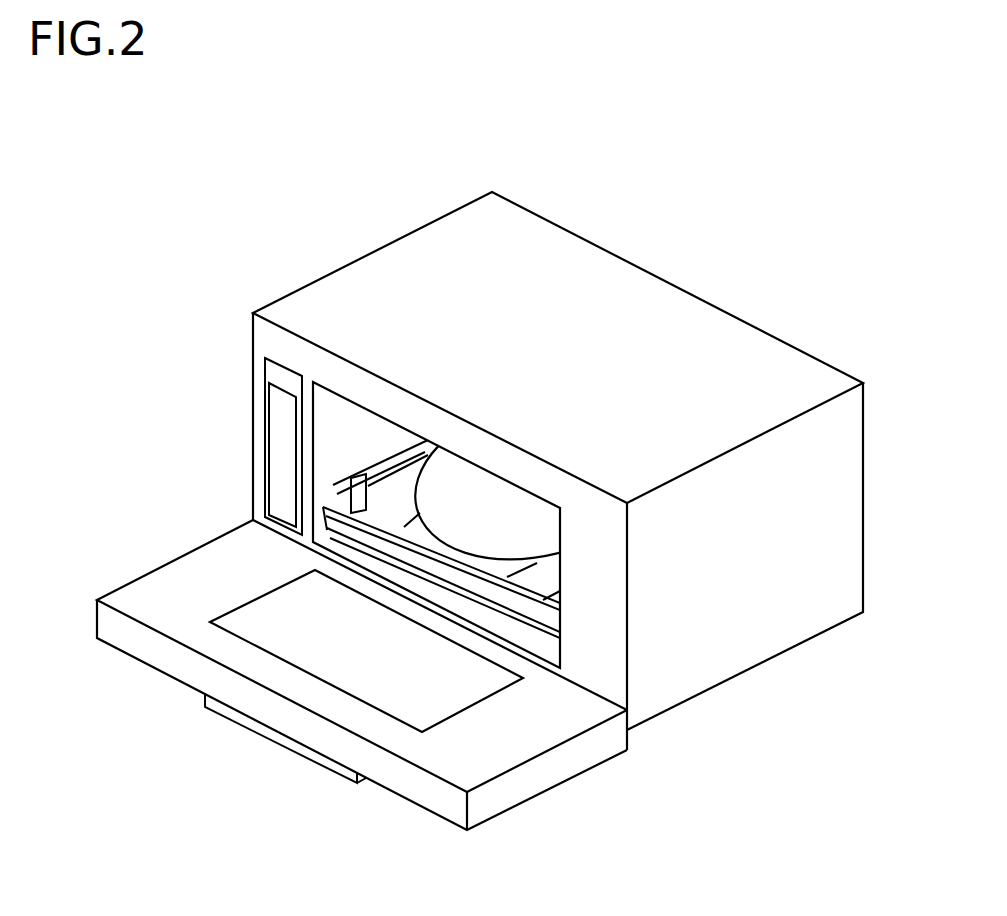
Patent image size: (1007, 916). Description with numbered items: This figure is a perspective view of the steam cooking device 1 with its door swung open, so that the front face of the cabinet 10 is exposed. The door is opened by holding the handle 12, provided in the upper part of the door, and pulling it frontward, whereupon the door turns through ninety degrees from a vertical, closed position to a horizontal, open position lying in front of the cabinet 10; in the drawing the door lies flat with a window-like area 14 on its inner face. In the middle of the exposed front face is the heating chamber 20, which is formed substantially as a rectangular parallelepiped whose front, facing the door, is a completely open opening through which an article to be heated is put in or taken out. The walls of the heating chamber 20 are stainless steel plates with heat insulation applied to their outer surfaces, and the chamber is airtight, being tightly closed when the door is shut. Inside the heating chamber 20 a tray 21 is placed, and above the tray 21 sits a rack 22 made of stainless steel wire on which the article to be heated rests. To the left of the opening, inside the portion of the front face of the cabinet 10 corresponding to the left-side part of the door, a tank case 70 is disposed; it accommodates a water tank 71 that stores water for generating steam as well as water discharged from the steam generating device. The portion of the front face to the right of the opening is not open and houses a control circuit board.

The steam cooking device 1 is at (337, 211).
The cabinet 10 is at (650, 300).
The handle 12 is at (268, 733).
The door 14 is at (260, 618).
The heating chamber 20 is at (365, 422).
The tray 21 is at (532, 618).
The rack 22 is at (473, 560).
The tank case 70 is at (272, 370).
The water tank 71 is at (293, 453).